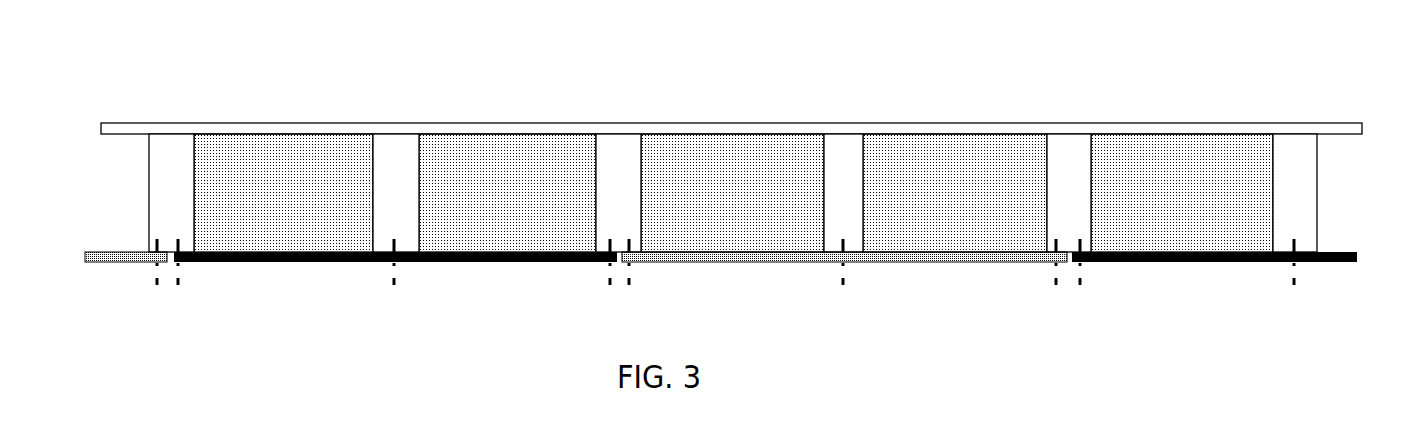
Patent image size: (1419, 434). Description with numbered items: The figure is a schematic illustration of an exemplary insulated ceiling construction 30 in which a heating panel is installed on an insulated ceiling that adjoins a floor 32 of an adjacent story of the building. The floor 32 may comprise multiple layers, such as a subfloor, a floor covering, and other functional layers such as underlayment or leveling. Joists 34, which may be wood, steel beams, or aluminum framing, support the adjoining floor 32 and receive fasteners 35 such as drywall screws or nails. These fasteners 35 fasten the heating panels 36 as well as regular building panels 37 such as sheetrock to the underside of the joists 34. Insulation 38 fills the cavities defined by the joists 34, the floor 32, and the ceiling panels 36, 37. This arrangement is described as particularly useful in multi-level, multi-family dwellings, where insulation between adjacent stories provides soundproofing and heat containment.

The insulated ceiling construction 30 is at (118, 103).
The floor 32 is at (255, 129).
The joists 34 is at (733, 193).
The fasteners 35 is at (731, 279).
The heating panels 36 is at (487, 265).
The regular building panels 37 is at (101, 263).
The insulation 38 is at (312, 165).